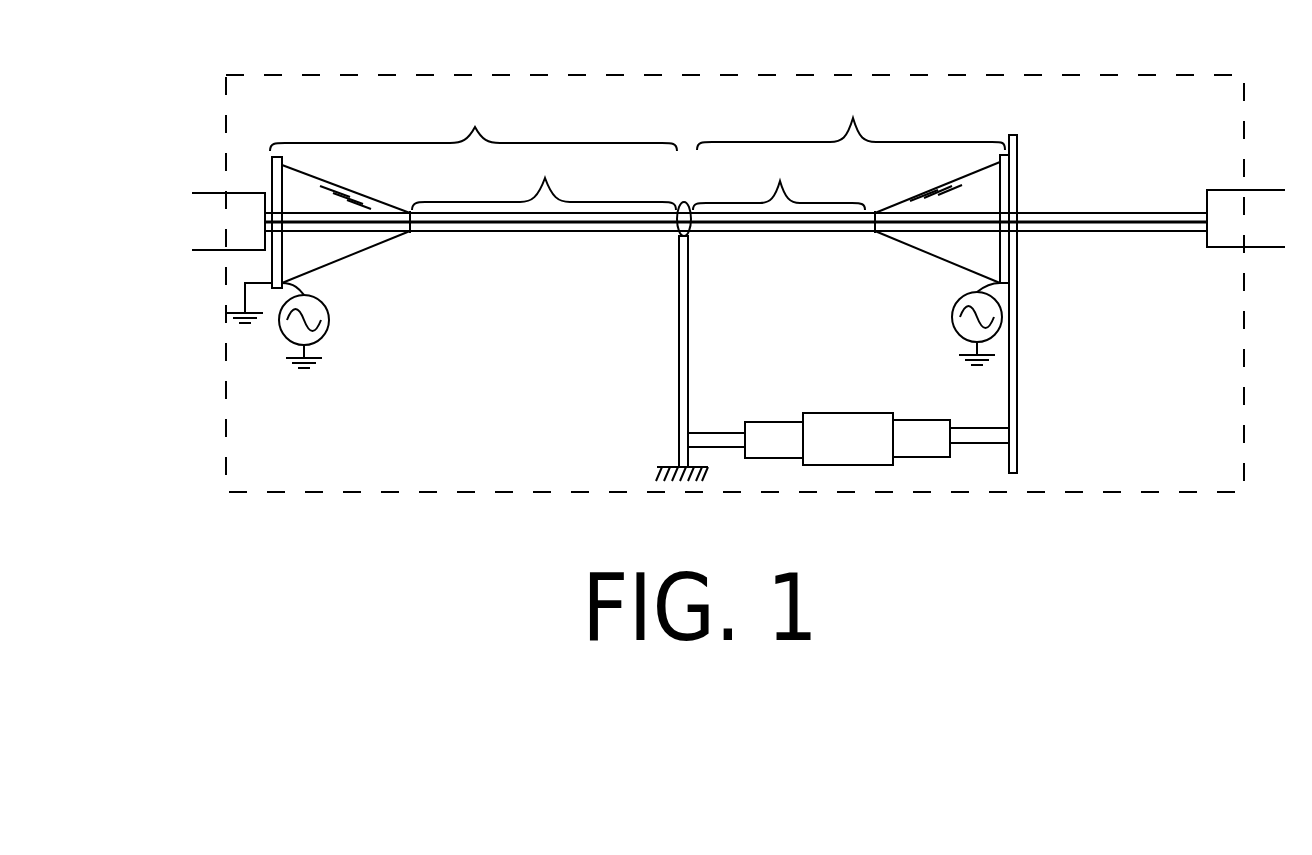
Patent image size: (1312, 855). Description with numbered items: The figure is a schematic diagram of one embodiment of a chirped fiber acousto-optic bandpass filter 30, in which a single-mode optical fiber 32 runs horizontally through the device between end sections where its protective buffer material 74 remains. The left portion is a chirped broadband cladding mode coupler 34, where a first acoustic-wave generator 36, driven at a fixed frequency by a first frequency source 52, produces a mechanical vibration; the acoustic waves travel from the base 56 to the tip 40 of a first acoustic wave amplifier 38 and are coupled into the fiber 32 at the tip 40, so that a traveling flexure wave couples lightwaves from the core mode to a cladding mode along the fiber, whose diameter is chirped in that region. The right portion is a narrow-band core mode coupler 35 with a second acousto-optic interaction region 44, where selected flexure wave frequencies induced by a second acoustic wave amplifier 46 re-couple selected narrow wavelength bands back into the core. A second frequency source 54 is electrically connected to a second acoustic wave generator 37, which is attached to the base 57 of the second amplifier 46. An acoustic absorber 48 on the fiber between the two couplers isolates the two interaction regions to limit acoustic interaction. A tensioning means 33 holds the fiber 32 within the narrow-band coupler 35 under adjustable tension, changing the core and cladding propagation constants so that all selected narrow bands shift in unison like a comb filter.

The chirped fiber acousto-optic bandpass filter 30 is at (735, 246).
The single-mode optical fiber 32 is at (736, 261).
The tensioning means 33 is at (848, 401).
The chirped broadband cladding mode coupler 34 is at (473, 126).
The narrow-band core mode coupler 35 is at (851, 122).
The first acoustic-wave generator 36 is at (254, 210).
The second acoustic wave generator 37 is at (988, 275).
The first acoustic wave amplifier 38 is at (346, 276).
The tip of the first acoustic wave amplifier 40 is at (395, 193).
The second acousto-optic interaction region 44 is at (779, 183).
The second acoustic wave amplifier 46 is at (930, 274).
The acoustic absorber 48 is at (652, 341).
The first frequency source 52 is at (347, 325).
The second frequency source 54 is at (935, 324).
The base of the first acoustic wave amplifier 56 is at (346, 183).
The base of the second acoustic wave amplifier 57 is at (937, 178).
The buffer material 74 is at (731, 261).